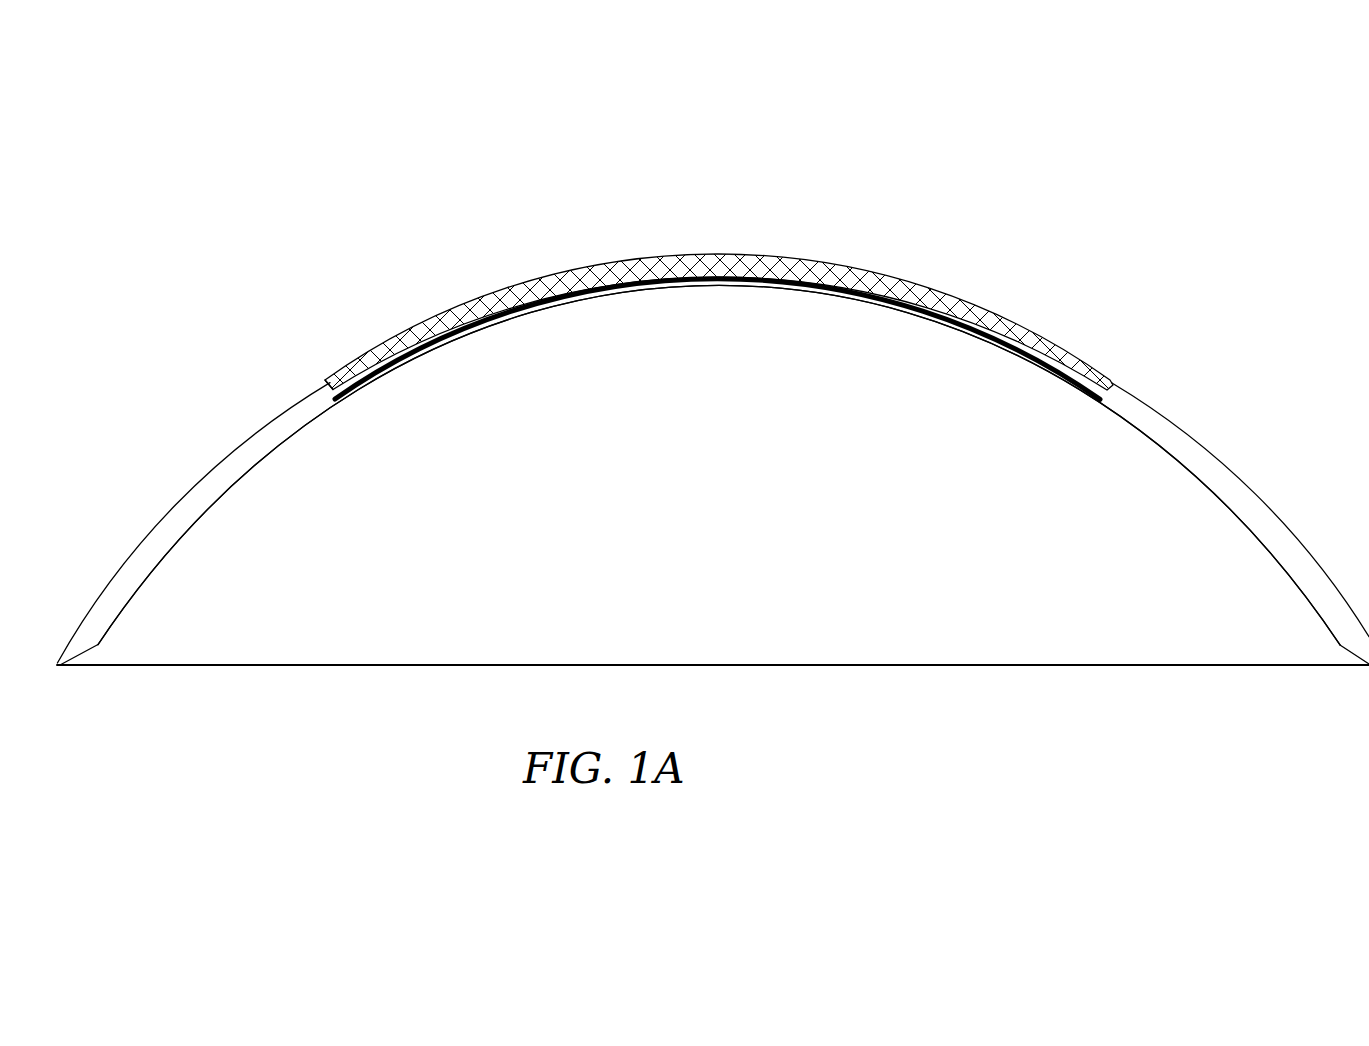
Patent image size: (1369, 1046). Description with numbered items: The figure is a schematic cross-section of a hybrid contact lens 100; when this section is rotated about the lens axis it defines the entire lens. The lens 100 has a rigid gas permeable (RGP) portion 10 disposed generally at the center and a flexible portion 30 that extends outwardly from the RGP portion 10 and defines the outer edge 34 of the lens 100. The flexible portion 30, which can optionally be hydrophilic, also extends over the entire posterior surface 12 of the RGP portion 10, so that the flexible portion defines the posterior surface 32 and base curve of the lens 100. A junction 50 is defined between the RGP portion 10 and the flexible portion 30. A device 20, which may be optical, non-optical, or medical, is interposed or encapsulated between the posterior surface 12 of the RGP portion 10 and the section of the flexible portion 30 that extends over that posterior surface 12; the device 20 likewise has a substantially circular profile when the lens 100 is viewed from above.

The hybrid contact lens 100 is at (713, 425).
The rigid gas permeable (RGP) portion 10 is at (748, 251).
The posterior surface of the RGP portion 12 is at (757, 284).
The device 20 is at (719, 324).
The flexible portion 30 is at (178, 546).
The posterior surface of the hybrid contact lens 32 is at (700, 286).
The outer edge 34 is at (935, 670).
The junction 50 is at (324, 387).